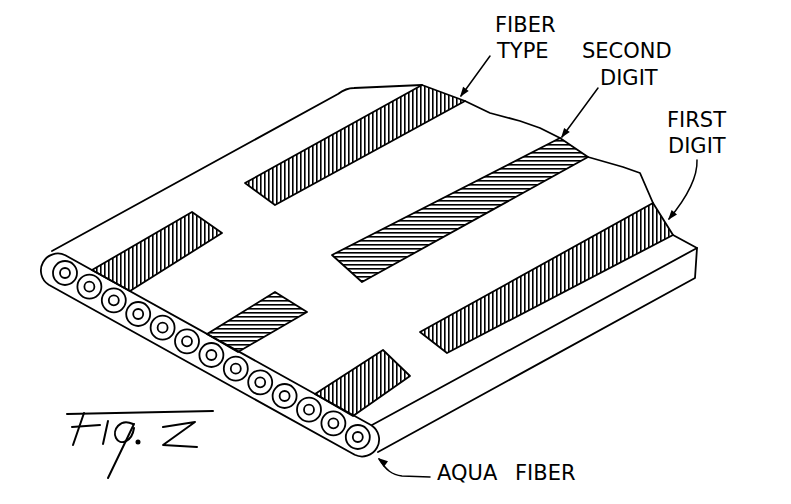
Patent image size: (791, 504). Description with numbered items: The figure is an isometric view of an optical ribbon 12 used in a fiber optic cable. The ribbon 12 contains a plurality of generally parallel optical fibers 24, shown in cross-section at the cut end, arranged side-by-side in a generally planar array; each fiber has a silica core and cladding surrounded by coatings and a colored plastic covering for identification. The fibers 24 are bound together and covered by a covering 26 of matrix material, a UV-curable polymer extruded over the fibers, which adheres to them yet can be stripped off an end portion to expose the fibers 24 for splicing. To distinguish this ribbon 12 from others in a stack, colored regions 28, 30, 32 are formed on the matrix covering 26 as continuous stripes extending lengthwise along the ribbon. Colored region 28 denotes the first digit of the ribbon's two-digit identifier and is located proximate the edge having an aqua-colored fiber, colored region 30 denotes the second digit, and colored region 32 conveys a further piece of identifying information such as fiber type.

The optical ribbon 12 is at (142, 185).
The optical fibers 24 is at (118, 299).
The covering of matrix material 26 is at (187, 353).
The colored region 28 is at (413, 378).
The colored region 30 is at (280, 287).
The colored region 32 is at (187, 213).